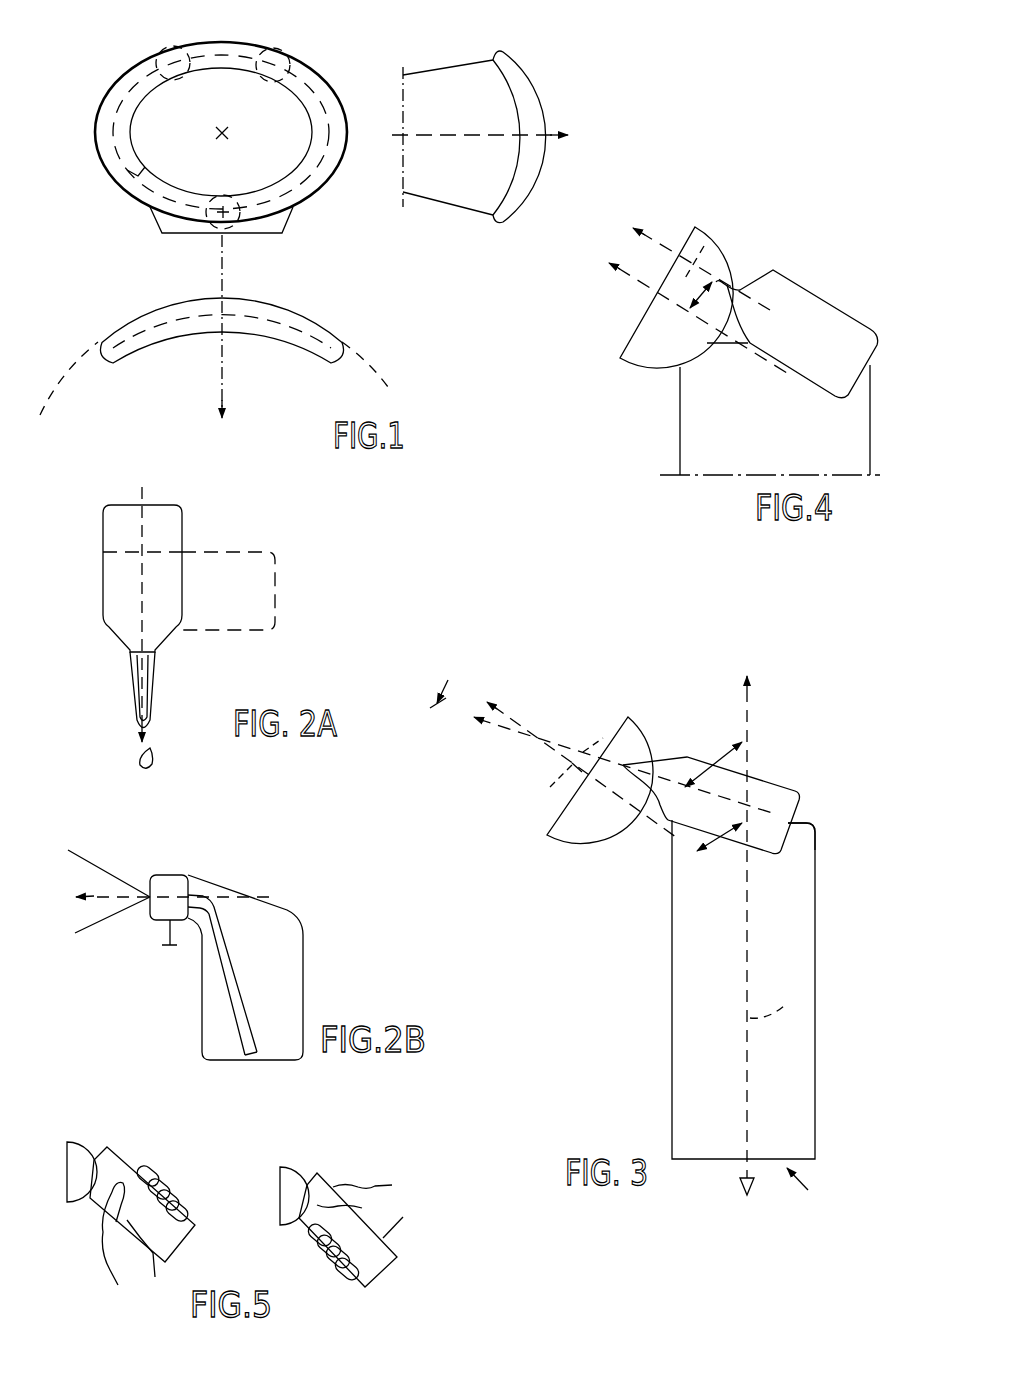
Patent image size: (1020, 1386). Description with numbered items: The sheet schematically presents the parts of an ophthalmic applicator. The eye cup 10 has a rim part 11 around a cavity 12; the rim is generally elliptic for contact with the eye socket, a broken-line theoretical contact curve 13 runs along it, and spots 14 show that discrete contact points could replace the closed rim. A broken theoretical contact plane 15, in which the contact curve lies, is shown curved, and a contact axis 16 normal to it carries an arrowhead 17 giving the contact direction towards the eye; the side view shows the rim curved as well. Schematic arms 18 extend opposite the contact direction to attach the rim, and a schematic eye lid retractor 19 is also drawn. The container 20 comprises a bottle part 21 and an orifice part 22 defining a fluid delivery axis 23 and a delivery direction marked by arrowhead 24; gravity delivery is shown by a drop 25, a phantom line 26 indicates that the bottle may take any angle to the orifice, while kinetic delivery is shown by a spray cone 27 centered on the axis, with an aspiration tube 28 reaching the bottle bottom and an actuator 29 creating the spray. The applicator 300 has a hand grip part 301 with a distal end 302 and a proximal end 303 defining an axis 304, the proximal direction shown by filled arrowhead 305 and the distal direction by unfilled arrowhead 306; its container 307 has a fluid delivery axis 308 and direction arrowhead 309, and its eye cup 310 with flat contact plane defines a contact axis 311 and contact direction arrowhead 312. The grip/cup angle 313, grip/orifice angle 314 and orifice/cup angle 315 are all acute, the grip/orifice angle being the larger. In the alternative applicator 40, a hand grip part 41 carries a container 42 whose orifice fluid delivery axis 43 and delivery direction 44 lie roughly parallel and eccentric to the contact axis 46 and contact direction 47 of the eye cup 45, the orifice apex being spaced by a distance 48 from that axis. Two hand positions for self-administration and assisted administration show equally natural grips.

In FIG. 1, the eye cup 10 is at (139, 44).
In FIG. 1, the rim part 11 is at (222, 42).
In FIG. 1, the cavity 12 is at (187, 136).
In FIG. 1, the theoretical contact curve 13 is at (140, 175).
In FIG. 1, the spots 14 is at (172, 48).
In FIG. 1, the theoretical contact plane 15 is at (66, 389).
In FIG. 1, the contact axis 16 is at (229, 133).
In FIG. 1, the arrowhead 17 is at (228, 421).
In FIG. 1, the schematic arms 18 is at (222, 298).
In FIG. 1, the eye lid retractor 19 is at (162, 232).
In FIG. 2A, the container 20 is at (192, 527).
In FIG. 2B, the container 20 is at (238, 880).
In FIG. 2A, the bottle part 21 is at (105, 521).
In FIG. 2B, the bottle part 21 is at (285, 948).
In FIG. 2A, the orifice part 22 is at (150, 668).
In FIG. 2B, the orifice part 22 is at (171, 875).
In FIG. 2A, the fluid delivery axis 23 is at (143, 605).
In FIG. 2B, the fluid delivery axis 23 is at (86, 906).
In FIG. 2A, the arrowhead 24 is at (137, 742).
In FIG. 2B, the arrowhead 24 is at (73, 882).
In FIG. 2A, the drop 25 is at (158, 756).
In FIG. 2A, the phantom line 26 is at (277, 595).
In FIG. 2B, the spray cone 27 is at (93, 926).
In FIG. 2B, the aspiration tube 28 is at (245, 1000).
In FIG. 2B, the actuator 29 is at (162, 940).
In FIG. 4, the applicator 40 is at (793, 267).
In FIG. 4, the hand grip part 41 is at (788, 429).
In FIG. 4, the container 42 is at (839, 298).
In FIG. 4, the orifice fluid delivery axis 43 is at (702, 232).
In FIG. 4, the fluid delivery direction 44 is at (638, 228).
In FIG. 4, the eye cup 45 is at (662, 372).
In FIG. 4, the contact axis 46 is at (680, 312).
In FIG. 4, the contact direction 47 is at (606, 268).
In FIG. 4, the distance 48 is at (700, 290).
In FIG. 3, the applicator 300 is at (774, 738).
In FIG. 3, the hand grip part 301 is at (733, 966).
In FIG. 3, the distal end 302 is at (818, 1188).
In FIG. 3, the proximal end 303 is at (815, 818).
In FIG. 3, the axis 304 is at (777, 999).
In FIG. 3, the filled arrowhead 305 is at (750, 682).
In FIG. 3, the unfilled arrowhead 306 is at (741, 1186).
In FIG. 3, the container 307 is at (792, 783).
In FIG. 3, the fluid delivery axis 308 is at (604, 730).
In FIG. 3, the arrowhead 309 is at (480, 724).
In FIG. 3, the eye cup 310 is at (588, 853).
In FIG. 3, the contact axis 311 is at (557, 781).
In FIG. 3, the arrowhead 312 is at (482, 698).
In FIG. 3, the grip/cup angle 313 is at (715, 840).
In FIG. 3, the grip/orifice angle 314 is at (712, 758).
In FIG. 3, the orifice/cup angle 315 is at (447, 680).